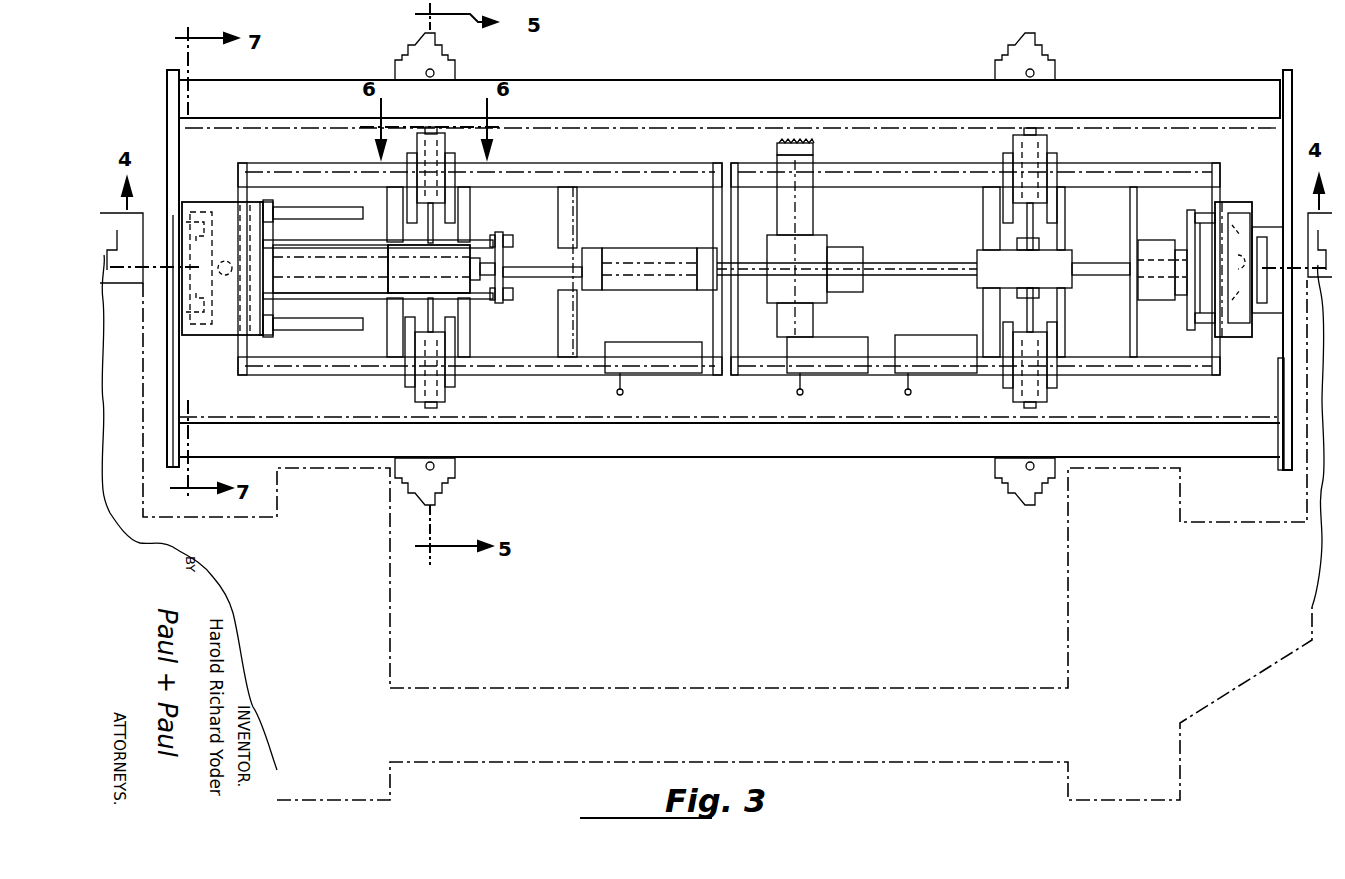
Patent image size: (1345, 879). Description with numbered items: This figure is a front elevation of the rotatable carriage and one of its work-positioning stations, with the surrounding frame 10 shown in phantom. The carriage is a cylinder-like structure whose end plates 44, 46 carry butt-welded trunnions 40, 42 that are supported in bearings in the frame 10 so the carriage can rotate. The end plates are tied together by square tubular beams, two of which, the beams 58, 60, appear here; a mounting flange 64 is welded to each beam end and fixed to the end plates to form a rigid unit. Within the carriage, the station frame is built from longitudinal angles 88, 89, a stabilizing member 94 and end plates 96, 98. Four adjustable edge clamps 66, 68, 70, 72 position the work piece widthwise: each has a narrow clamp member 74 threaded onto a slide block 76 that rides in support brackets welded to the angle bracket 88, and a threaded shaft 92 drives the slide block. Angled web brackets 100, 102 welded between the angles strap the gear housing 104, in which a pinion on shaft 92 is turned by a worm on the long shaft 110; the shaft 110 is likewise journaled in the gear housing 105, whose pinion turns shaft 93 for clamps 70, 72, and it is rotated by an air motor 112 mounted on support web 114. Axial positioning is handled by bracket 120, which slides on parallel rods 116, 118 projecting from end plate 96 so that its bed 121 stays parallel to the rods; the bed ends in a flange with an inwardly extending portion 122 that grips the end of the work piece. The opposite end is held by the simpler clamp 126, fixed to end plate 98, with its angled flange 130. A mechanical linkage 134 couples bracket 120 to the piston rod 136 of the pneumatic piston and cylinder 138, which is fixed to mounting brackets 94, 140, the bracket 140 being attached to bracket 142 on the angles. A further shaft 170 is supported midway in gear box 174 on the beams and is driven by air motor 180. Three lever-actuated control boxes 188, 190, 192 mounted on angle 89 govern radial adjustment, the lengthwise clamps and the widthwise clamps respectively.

The frame 10 is at (907, 688).
The trunnion 40 is at (158, 226).
The trunnion 42 is at (1305, 297).
The end plate 44 is at (167, 110).
The end plate 46 is at (1290, 470).
The tubular beam 58 is at (906, 96).
The tubular beam 60 is at (799, 438).
The mounting flange 64 is at (1280, 445).
The adjustable edge clamp 66 is at (504, 171).
The adjustable edge clamp 68 is at (470, 385).
The adjustable edge clamp 70 is at (1068, 138).
The adjustable edge clamp 72 is at (1012, 420).
The clamp member 74 is at (430, 128).
The slide block 76 is at (445, 148).
The angle bracket 88 is at (625, 178).
The angle 89 is at (575, 372).
The threaded shaft 92 is at (426, 229).
The shaft 93 is at (1034, 230).
The stabilizing member 94 is at (722, 223).
The end plate 96 is at (238, 193).
The end plate 98 is at (1220, 183).
The angled web bracket 100 is at (392, 206).
The angled web bracket 102 is at (470, 208).
The gear housing 104 is at (404, 283).
The gear housing 105 is at (990, 258).
The shaft 110 is at (500, 278).
The air motor 112 is at (1153, 285).
The support web 114 is at (1137, 324).
The rod 116 is at (317, 213).
The rod 118 is at (312, 323).
The bracket 120 is at (266, 345).
The bed 121 is at (228, 322).
The inwardly extending portion 122 is at (195, 270).
The clamp 126 is at (1240, 350).
The angled flange 130 is at (1238, 224).
The mechanical linkage 134 is at (475, 240).
The piston rod 136 is at (534, 268).
The pneumatic piston and cylinder 138 is at (630, 264).
The mounting bracket 140 is at (591, 248).
The bracket 142 is at (570, 305).
The shaft 170 is at (319, 266).
The gear box 174 is at (810, 245).
The air motor 180 is at (848, 255).
The control box 188 is at (673, 360).
The control box 190 is at (838, 360).
The control box 192 is at (952, 360).